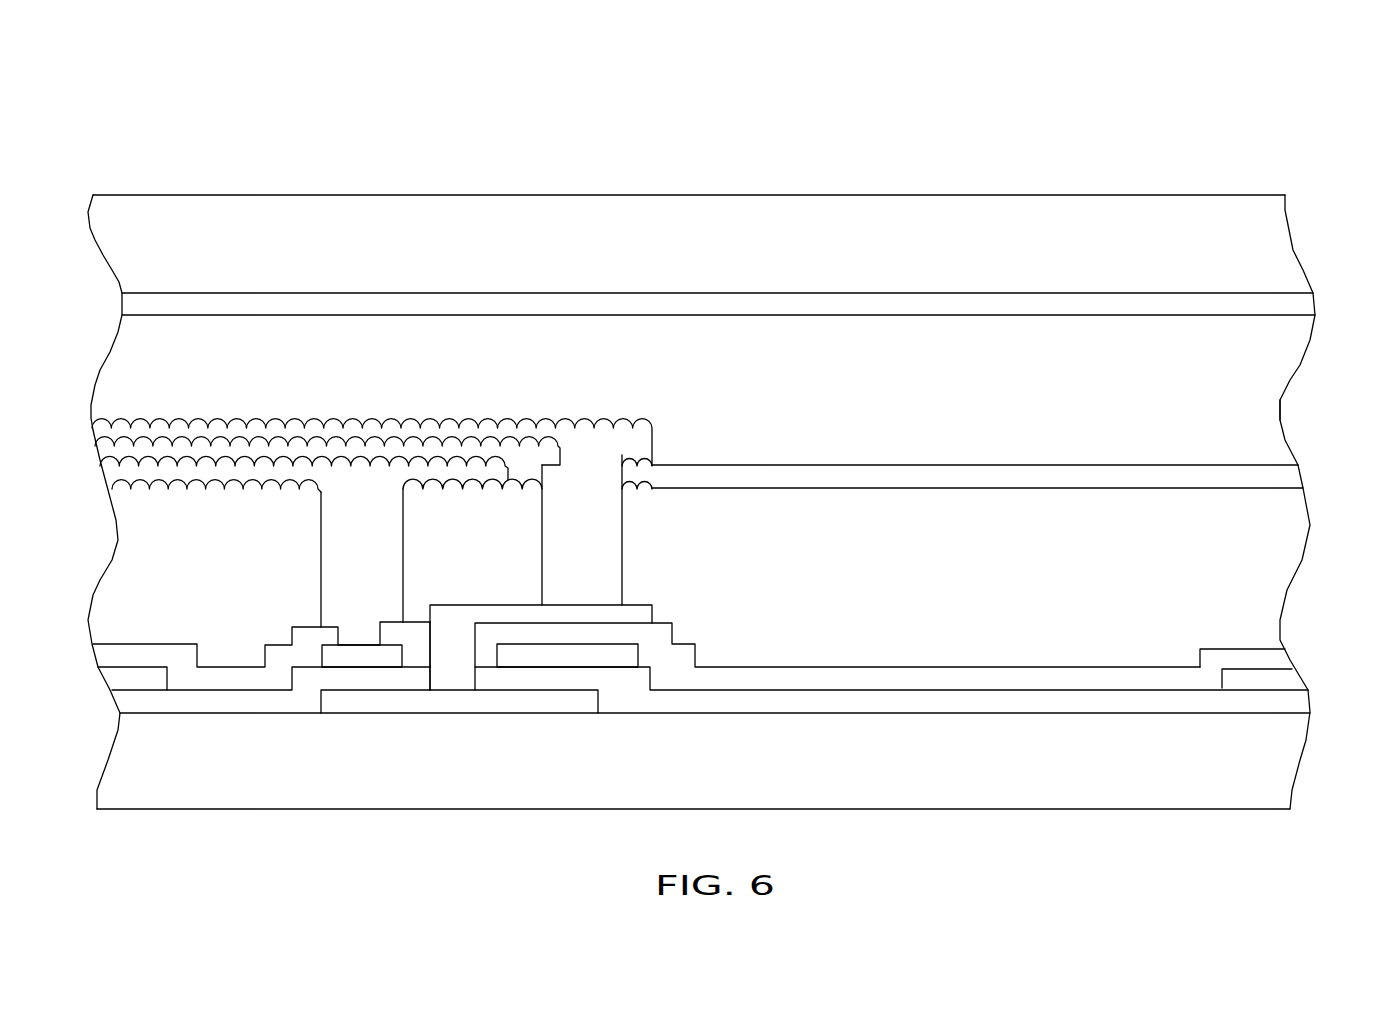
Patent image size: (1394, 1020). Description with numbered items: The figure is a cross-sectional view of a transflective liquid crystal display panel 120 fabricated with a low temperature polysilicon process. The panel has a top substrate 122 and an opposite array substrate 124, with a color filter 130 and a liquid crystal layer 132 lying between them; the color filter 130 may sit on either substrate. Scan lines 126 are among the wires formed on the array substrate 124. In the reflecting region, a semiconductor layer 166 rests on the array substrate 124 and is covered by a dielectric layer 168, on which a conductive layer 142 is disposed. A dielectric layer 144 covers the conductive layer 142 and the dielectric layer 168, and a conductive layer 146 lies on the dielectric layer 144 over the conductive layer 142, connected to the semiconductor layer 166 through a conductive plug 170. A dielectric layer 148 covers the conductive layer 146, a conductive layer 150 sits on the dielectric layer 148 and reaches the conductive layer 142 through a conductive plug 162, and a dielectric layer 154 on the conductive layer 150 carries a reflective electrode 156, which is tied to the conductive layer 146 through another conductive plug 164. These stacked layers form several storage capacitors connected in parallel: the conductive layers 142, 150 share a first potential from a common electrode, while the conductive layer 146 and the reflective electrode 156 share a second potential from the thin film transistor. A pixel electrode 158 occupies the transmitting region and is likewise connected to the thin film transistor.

The transflective liquid crystal display panel 120 is at (1140, 122).
The top substrate 122 is at (1265, 251).
The array substrate 124 is at (1285, 765).
The scan line 126 is at (145, 680).
The color filter 130 is at (1283, 306).
The liquid crystal layer 132 is at (1272, 382).
The conductive layer 142 is at (373, 655).
The dielectric layer 144 is at (122, 655).
The conductive layer 146 is at (627, 616).
The dielectric layer 148 is at (133, 518).
The conductive layer 150 is at (113, 476).
The dielectric layer 154 is at (103, 450).
The reflective electrode 156 is at (412, 423).
The pixel electrode 158 is at (1278, 480).
The conductive plug 162 is at (386, 549).
The conductive plug 164 is at (610, 545).
The semiconductor layer 166 is at (510, 705).
The dielectric layer 168 is at (210, 700).
The conductive plug 170 is at (455, 670).